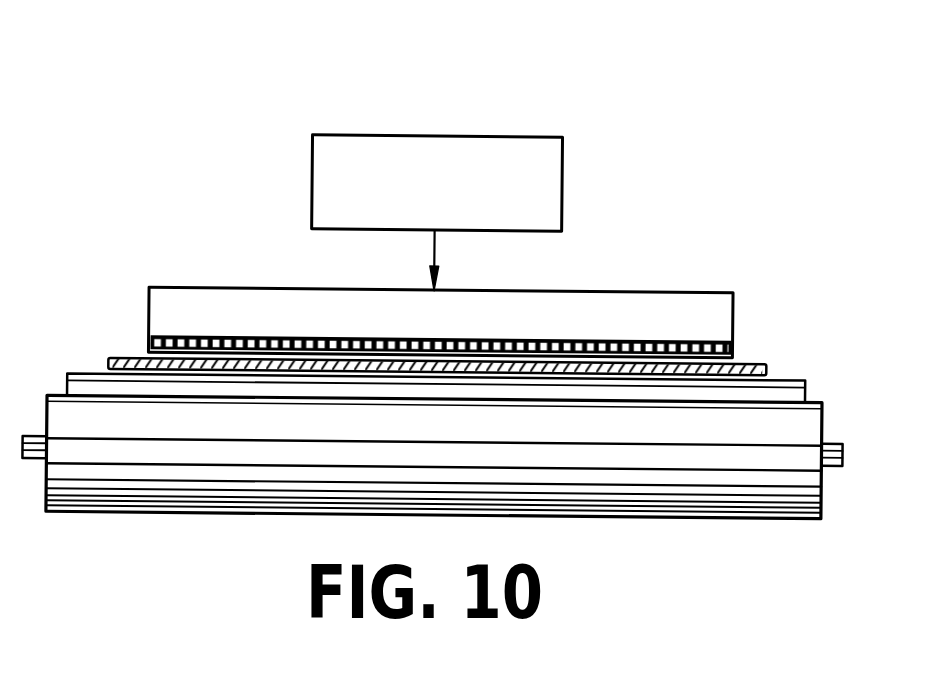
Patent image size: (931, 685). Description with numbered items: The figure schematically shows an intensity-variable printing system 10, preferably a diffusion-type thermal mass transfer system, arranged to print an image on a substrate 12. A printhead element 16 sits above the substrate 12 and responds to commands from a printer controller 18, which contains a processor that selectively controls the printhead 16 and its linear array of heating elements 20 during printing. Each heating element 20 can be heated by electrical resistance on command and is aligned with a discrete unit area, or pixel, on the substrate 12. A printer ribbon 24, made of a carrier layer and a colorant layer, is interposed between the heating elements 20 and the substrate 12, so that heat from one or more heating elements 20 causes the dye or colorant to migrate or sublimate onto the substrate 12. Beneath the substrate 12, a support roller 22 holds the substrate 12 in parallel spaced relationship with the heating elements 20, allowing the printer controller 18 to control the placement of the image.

The intensity-variable printing system 10 is at (438, 98).
The substrate 12 is at (791, 366).
The printhead element 16 is at (612, 292).
The printer controller 18 is at (523, 145).
The heating elements 20 is at (183, 335).
The support roller 22 is at (203, 513).
The printer ribbon 24 is at (743, 363).